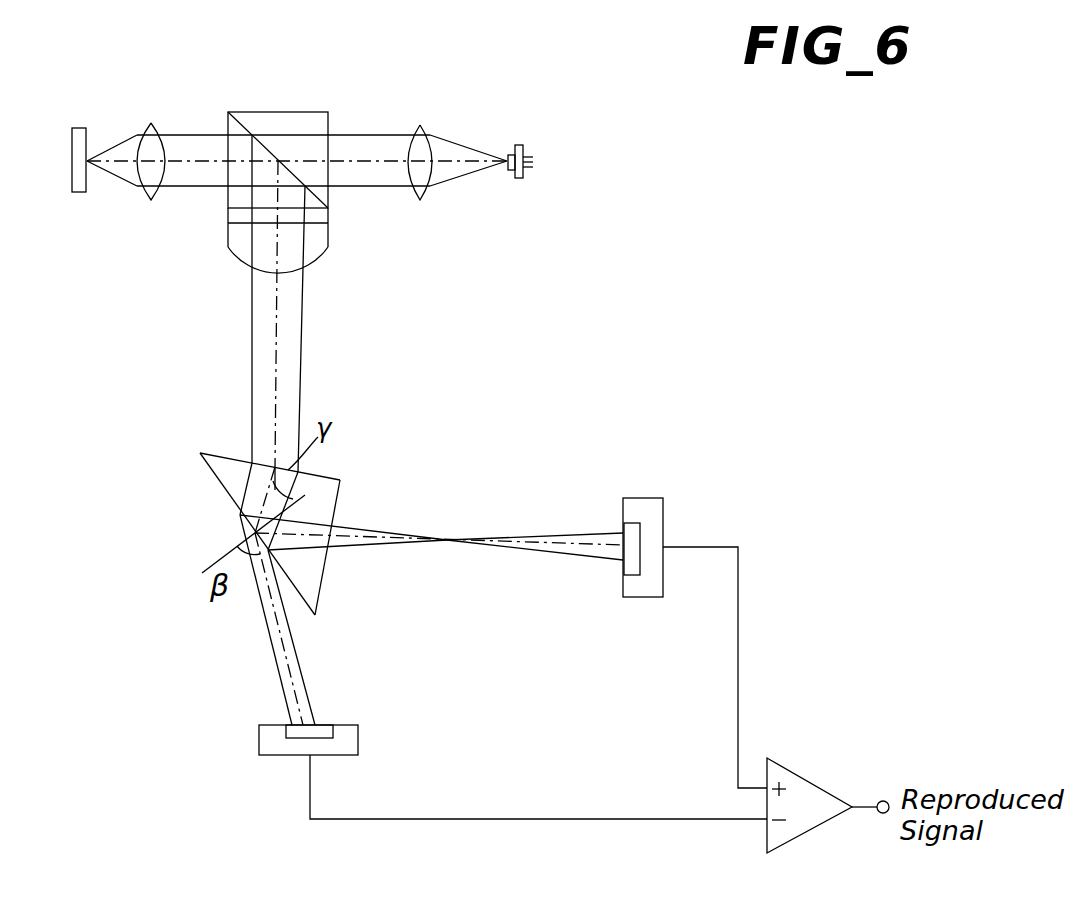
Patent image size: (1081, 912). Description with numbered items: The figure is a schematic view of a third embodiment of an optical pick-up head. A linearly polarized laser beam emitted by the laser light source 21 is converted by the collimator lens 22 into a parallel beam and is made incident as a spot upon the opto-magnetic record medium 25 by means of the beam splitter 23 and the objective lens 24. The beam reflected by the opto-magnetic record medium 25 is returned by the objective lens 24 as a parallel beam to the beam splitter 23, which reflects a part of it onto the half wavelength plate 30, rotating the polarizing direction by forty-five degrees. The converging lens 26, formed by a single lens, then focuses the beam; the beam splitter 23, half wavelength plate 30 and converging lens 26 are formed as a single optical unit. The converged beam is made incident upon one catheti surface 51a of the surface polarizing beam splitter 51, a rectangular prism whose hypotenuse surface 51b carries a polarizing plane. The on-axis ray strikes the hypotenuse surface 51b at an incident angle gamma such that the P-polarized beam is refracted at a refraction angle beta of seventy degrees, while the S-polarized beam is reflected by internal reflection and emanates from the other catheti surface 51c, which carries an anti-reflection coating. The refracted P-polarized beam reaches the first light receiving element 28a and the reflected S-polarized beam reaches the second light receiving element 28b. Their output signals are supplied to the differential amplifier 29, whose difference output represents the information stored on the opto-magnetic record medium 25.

The laser light source 21 is at (520, 145).
The collimator lens 22 is at (420, 125).
The beam splitter 23 is at (282, 112).
The objective lens 24 is at (150, 123).
The opto-magnetic record medium 25 is at (76, 128).
The converging lens 26 is at (326, 252).
The first light receiving element 28a is at (270, 723).
The second light receiving element 28b is at (645, 498).
The differential amplifier 29 is at (808, 780).
The half wavelength plate 30 is at (232, 215).
The surface polarizing beam splitter 51 is at (279, 525).
The catheti surface 51a is at (332, 478).
The hypotenuse surface 51b is at (213, 475).
The catheti surface 51c is at (323, 580).